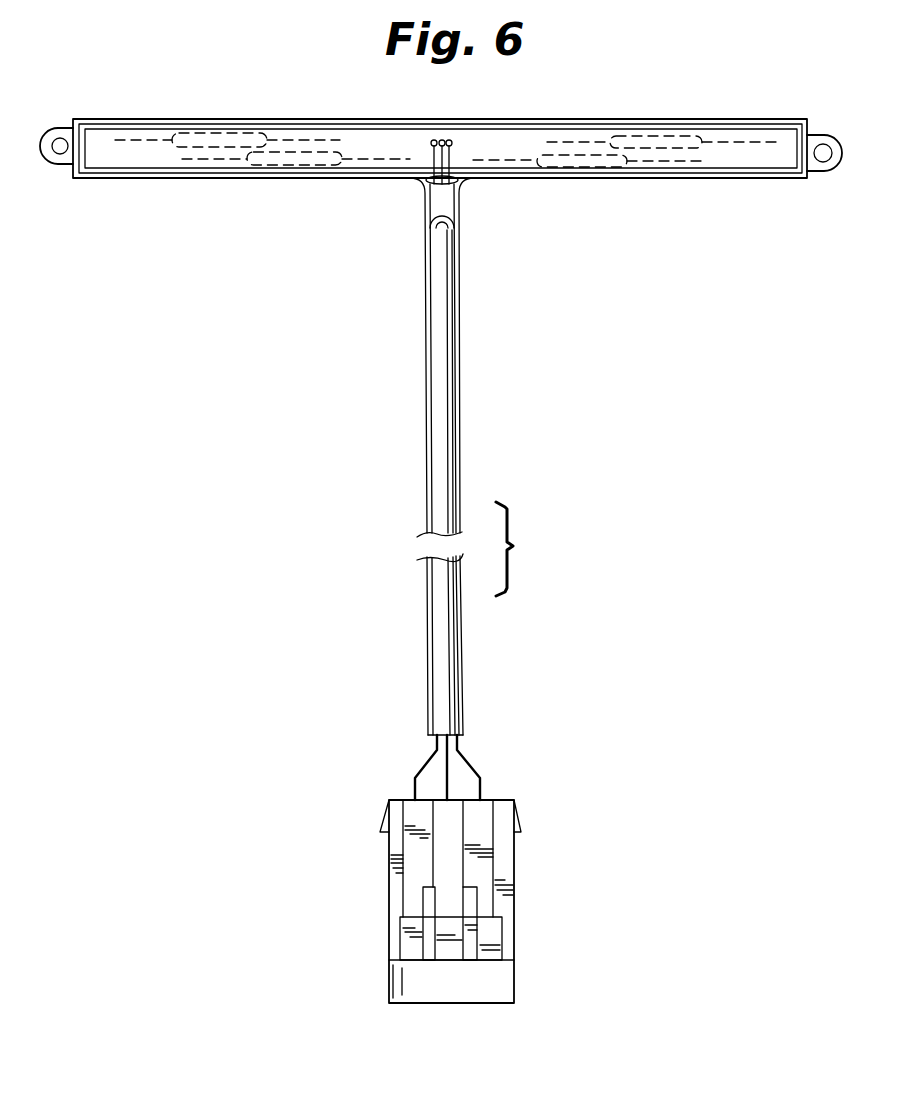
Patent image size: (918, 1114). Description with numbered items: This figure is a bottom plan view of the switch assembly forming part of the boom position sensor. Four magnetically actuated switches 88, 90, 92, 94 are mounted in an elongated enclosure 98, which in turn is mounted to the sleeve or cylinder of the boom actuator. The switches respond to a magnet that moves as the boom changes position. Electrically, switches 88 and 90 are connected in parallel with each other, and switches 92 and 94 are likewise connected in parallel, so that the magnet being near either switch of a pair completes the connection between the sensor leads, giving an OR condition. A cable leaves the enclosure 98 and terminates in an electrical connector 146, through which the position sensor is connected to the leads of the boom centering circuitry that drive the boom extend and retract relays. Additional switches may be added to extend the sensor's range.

The magnetically actuated switch 88 is at (243, 134).
The magnetically actuated switch 90 is at (310, 165).
The magnetically actuated switch 92 is at (572, 172).
The magnetically actuated switch 94 is at (702, 148).
The enclosure 98 is at (173, 178).
The electrical connector 146 is at (515, 898).